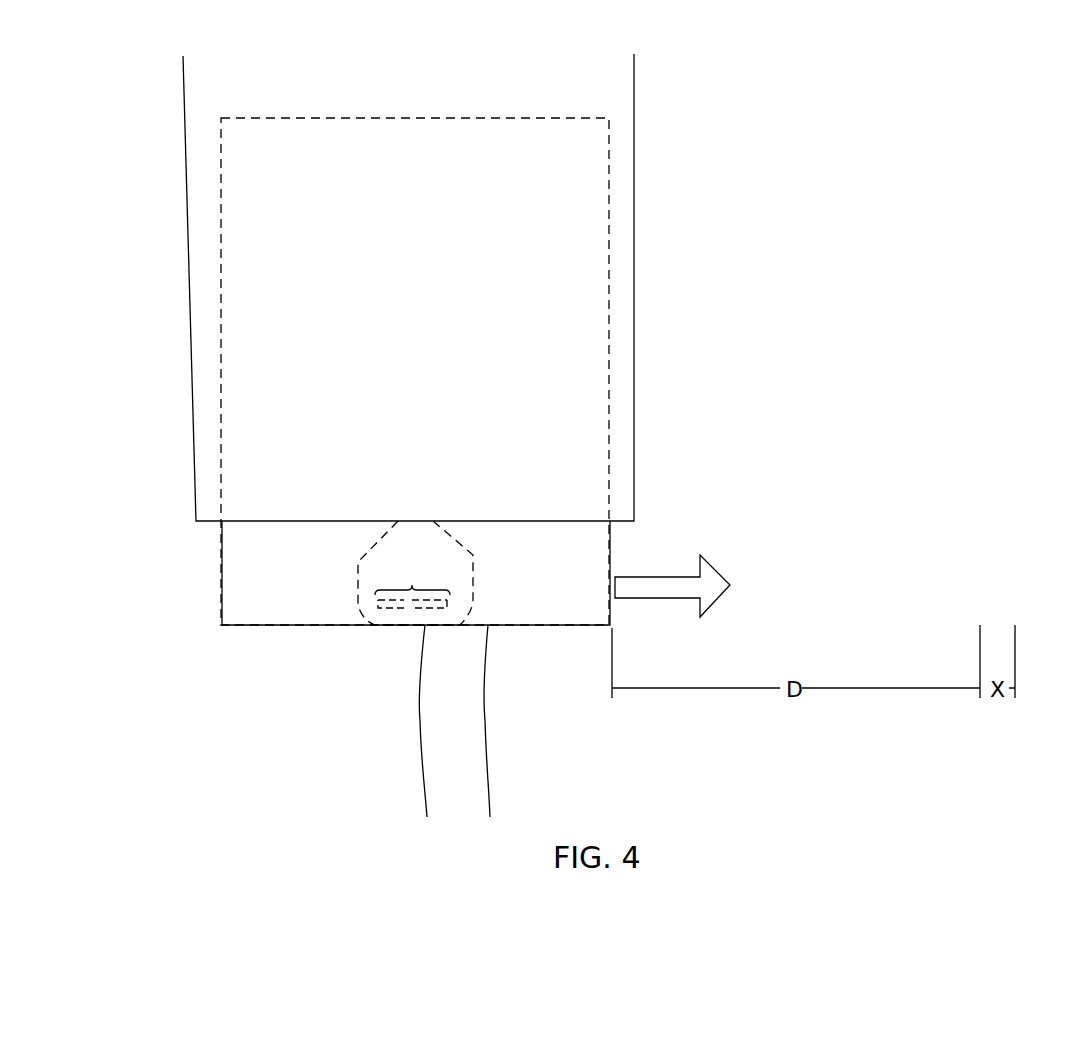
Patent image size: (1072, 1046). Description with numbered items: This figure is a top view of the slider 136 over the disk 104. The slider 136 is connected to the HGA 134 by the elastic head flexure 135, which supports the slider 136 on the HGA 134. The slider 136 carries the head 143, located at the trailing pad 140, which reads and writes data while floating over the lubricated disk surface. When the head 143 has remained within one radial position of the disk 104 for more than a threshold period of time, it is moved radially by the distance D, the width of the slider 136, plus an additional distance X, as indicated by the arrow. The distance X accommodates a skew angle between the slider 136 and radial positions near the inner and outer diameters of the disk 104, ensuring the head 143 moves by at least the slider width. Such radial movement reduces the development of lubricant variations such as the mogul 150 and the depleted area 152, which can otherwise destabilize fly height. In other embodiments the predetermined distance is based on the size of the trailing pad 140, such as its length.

The disk 104 is at (254, 739).
The HGA 134 is at (634, 233).
The elastic head flexure 135 is at (222, 578).
The slider 136 is at (383, 118).
The trailing pad 140 is at (477, 572).
The head 143 is at (412, 584).
The mogul 150 is at (417, 747).
The depleted area 152 is at (466, 721).